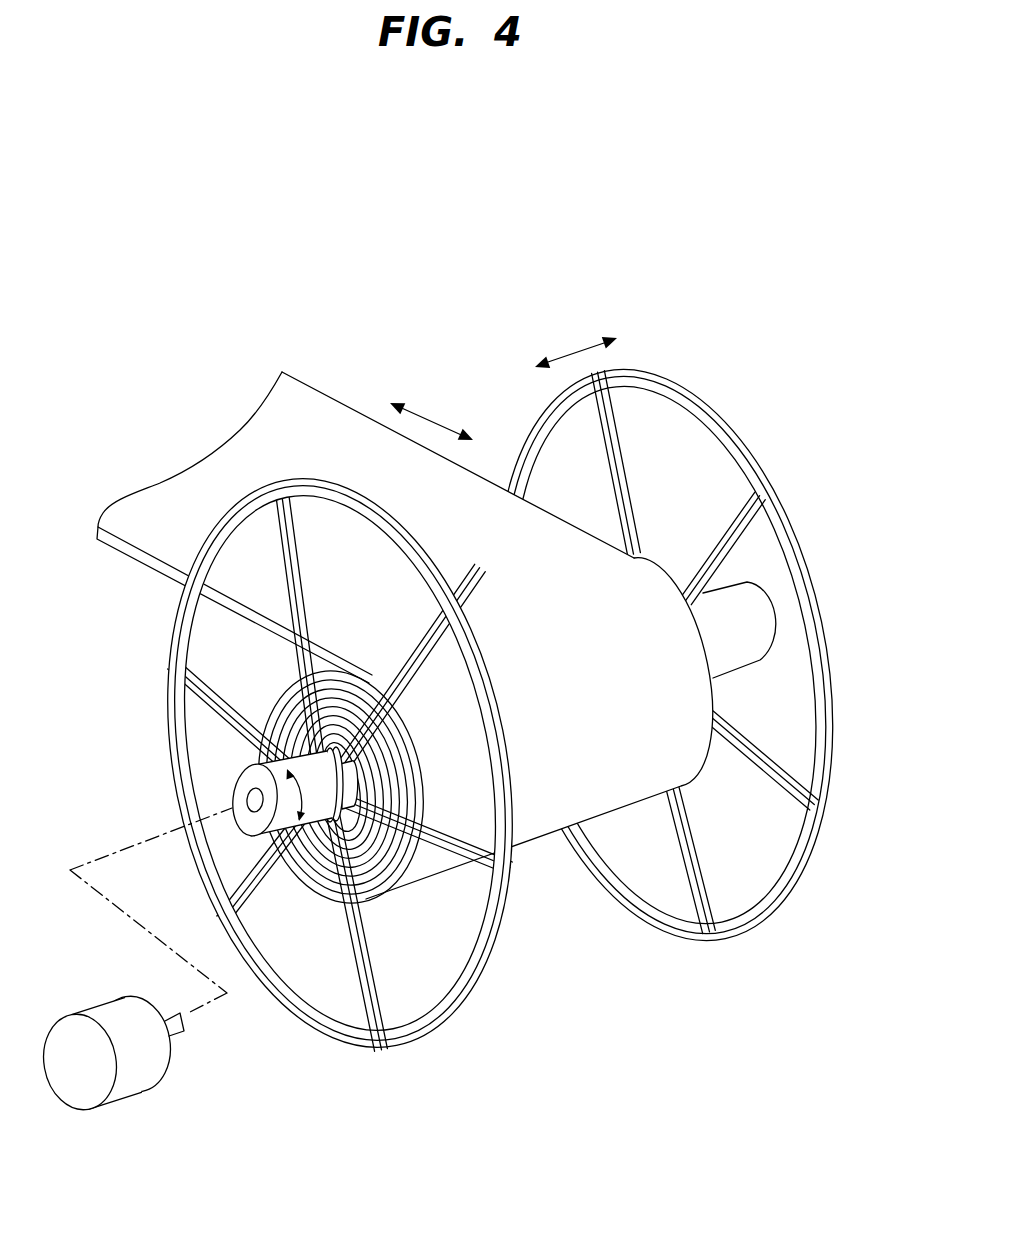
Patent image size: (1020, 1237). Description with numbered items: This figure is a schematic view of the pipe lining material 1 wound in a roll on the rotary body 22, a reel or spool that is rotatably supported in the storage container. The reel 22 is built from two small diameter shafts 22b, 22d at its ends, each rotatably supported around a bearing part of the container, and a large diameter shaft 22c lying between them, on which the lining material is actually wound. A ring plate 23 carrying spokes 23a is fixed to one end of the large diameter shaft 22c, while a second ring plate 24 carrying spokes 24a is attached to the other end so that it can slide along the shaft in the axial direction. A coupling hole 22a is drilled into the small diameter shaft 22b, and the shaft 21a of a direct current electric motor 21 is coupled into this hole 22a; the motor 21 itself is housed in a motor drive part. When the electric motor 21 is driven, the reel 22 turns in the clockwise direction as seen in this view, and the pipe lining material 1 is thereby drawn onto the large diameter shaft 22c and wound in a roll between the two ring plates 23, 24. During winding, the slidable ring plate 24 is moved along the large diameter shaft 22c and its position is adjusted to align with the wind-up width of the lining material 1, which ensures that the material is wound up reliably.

The pipe lining material 1 is at (323, 390).
The direct current electric motor 21 is at (137, 1090).
The shaft 21a is at (175, 1035).
The rotary body 22 is at (225, 774).
The coupling hole 22a is at (247, 800).
The small diameter shaft 22b is at (240, 838).
The large diameter shaft 22c is at (345, 795).
The small diameter shaft 22d is at (780, 605).
The ring plate 23 is at (178, 618).
The spokes 23a is at (387, 1007).
The ring plate 24 is at (673, 377).
The spokes 24a is at (707, 870).